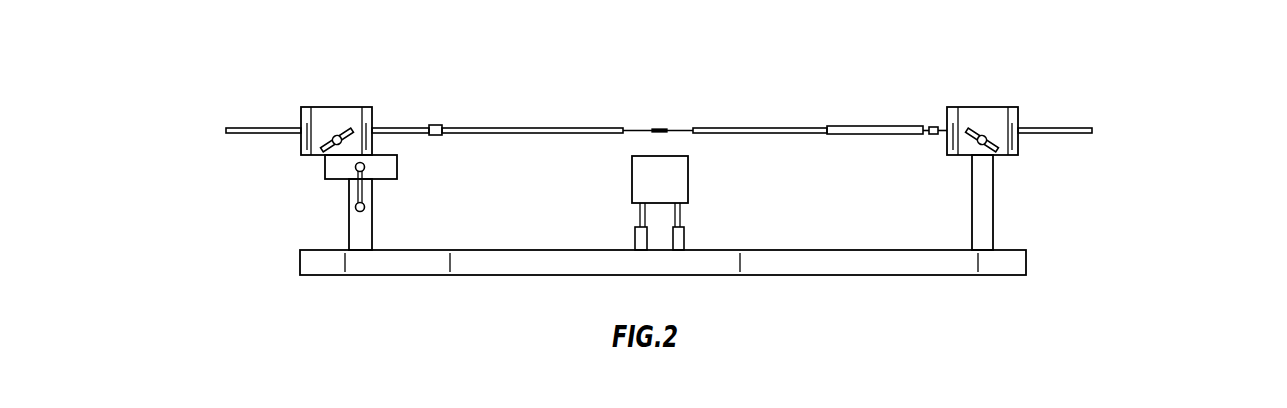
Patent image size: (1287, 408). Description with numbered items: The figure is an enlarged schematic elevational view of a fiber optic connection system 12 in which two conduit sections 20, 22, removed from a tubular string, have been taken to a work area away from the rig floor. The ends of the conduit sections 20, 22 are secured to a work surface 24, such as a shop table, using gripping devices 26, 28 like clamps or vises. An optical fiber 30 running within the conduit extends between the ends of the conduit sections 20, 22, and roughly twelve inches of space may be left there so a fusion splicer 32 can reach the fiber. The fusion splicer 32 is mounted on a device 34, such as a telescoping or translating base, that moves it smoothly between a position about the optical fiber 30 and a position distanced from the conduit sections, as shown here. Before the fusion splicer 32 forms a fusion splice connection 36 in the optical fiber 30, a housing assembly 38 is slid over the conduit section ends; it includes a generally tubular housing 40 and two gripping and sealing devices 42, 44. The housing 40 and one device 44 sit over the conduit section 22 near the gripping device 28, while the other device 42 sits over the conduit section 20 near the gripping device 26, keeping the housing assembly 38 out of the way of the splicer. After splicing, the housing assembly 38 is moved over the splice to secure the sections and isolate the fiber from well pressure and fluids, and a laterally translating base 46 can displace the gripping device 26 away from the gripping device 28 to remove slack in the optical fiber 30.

The connection system 12 is at (1185, 70).
The conduit section 20 is at (235, 127).
The conduit section 22 is at (1083, 127).
The work surface 24 is at (845, 250).
The gripping device 26 is at (353, 107).
The gripping device 28 is at (995, 107).
The optical fiber 30 is at (637, 126).
The fusion splicer 32 is at (632, 173).
The device 34 is at (683, 213).
The fusion splice connection 36 is at (660, 128).
The housing assembly 38 is at (850, 112).
The tubular housing 40 is at (843, 135).
The gripping and sealing device 42 is at (437, 125).
The gripping and sealing device 44 is at (933, 127).
The laterally translating base 46 is at (397, 160).